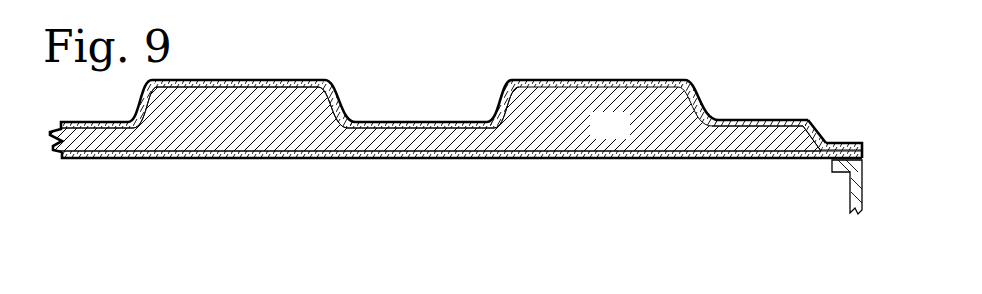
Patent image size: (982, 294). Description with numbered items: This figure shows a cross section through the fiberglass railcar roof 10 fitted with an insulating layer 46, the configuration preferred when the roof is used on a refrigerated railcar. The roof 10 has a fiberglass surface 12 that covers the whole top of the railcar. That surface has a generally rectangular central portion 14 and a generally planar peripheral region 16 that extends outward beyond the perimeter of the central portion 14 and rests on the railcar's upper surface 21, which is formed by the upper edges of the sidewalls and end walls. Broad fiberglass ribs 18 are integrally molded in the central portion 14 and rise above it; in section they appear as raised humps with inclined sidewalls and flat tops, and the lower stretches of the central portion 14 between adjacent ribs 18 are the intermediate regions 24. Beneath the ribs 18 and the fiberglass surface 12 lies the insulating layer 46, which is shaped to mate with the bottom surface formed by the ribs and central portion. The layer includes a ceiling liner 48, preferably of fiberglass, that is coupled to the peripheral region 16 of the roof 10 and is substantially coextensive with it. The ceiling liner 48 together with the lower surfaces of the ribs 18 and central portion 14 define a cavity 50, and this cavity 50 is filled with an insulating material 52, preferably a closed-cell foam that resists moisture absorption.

The fiberglass railcar roof 10 is at (737, 47).
The fiberglass surface 12 is at (830, 135).
The central portion 14 is at (747, 121).
The peripheral region 16 is at (839, 143).
The fiberglass ribs 18 is at (235, 80).
The upper surface 21 is at (862, 199).
The intermediate regions 24 is at (394, 122).
The insulating layer 46 is at (48, 164).
The ceiling liner 48 is at (235, 158).
The cavity 50 is at (480, 140).
The insulating material 52 is at (625, 137).